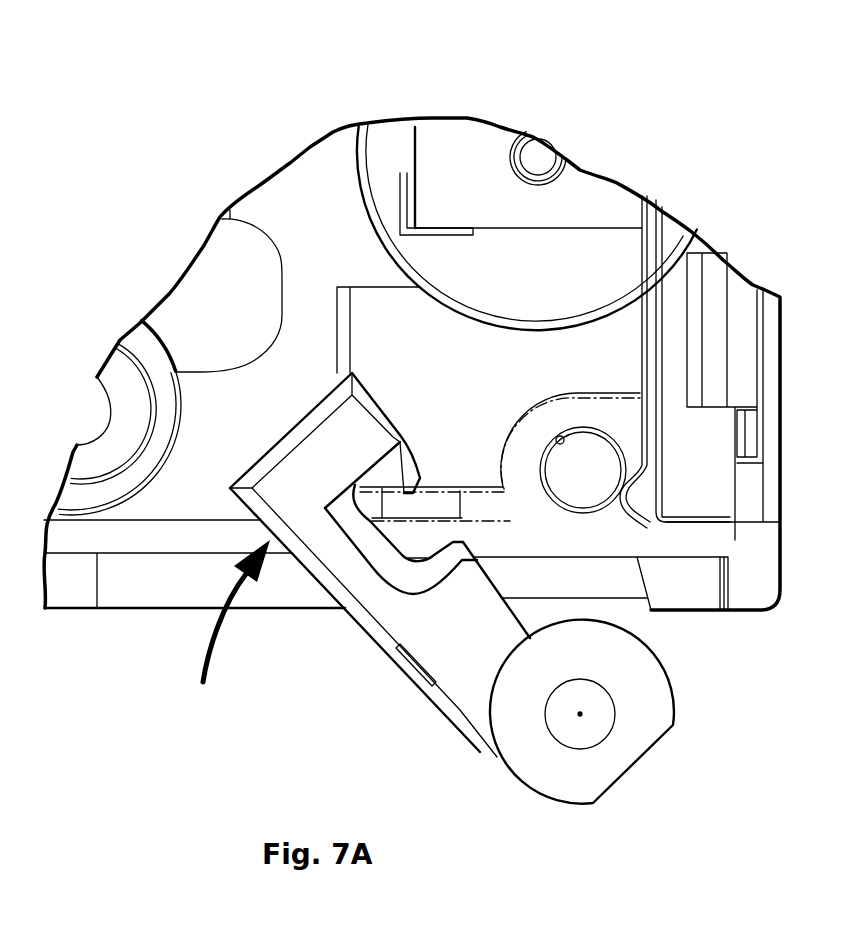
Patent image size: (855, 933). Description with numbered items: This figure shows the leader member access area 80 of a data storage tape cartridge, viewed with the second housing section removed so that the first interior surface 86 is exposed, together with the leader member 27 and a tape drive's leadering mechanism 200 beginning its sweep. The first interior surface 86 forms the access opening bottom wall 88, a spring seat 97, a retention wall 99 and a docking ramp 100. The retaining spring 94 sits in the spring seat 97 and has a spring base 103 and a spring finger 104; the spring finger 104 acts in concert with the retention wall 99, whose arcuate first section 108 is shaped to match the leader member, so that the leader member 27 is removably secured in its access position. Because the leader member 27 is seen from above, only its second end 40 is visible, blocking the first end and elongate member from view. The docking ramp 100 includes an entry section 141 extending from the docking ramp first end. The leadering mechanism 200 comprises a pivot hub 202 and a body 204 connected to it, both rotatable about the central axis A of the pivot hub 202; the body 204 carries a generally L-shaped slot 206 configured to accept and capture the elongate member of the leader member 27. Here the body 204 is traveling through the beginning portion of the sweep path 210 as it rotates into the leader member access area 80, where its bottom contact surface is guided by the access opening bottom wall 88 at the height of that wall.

The leader member access area 80 is at (797, 51).
The first interior surface 86 is at (239, 436).
The access opening bottom wall 88 is at (100, 608).
The retaining spring 94 is at (615, 190).
The spring seat 97 is at (560, 134).
The retention wall 99 is at (600, 385).
The docking ramp 100 is at (469, 478).
The spring base 103 is at (477, 136).
The spring finger 104 is at (654, 247).
The first section 108 is at (553, 437).
The leader member 27 is at (646, 442).
The second end 40 is at (594, 473).
The entry section 141 is at (373, 502).
The leadering mechanism 200 is at (698, 738).
The pivot hub 202 is at (605, 773).
The body 204 is at (423, 652).
The L-shaped slot 206 is at (348, 548).
The sweep path 210 is at (203, 652).
The central axis A is at (583, 715).